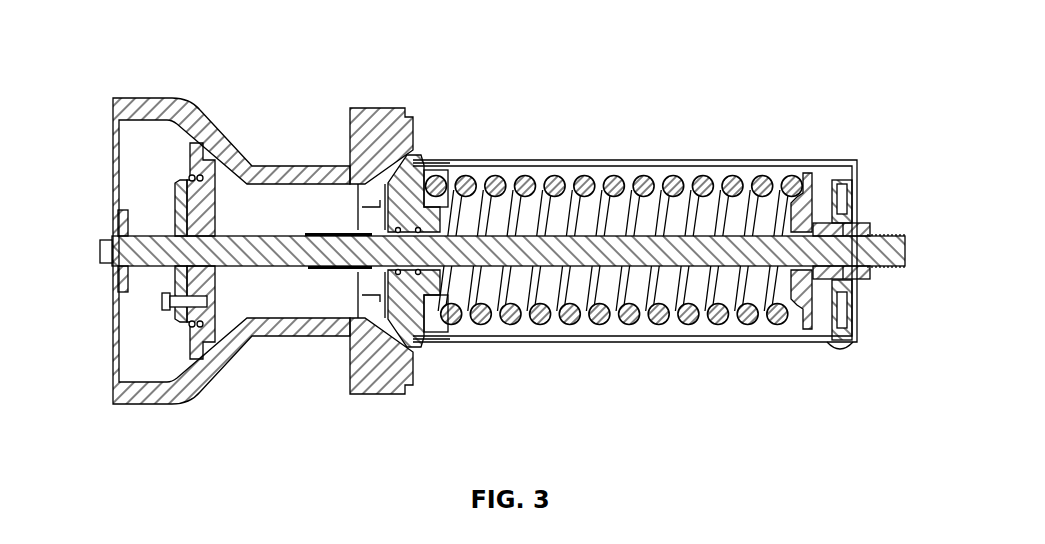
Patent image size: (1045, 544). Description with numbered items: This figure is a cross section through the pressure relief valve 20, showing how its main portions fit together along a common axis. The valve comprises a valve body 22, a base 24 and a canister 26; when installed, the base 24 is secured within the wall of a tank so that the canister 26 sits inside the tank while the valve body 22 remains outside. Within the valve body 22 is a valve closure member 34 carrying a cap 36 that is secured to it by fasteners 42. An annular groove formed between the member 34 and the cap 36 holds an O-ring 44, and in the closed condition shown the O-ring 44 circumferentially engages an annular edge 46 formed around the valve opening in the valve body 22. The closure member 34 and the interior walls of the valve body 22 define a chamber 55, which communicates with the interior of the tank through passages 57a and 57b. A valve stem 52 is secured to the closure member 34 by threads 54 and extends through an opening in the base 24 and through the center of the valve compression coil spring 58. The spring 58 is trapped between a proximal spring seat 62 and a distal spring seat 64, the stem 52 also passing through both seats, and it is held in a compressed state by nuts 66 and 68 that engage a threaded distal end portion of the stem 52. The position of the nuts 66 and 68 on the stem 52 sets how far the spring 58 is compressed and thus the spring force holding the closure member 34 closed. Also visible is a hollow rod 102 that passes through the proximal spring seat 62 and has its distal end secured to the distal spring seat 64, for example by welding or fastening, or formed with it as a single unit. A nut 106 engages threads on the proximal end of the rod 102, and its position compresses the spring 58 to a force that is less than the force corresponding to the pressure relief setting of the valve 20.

The pressure relief valve 20 is at (192, 50).
The valve body 22 is at (183, 395).
The base 24 is at (380, 388).
The canister 26 is at (655, 160).
The valve closure member 34 is at (210, 208).
The cap 36 is at (176, 203).
The fasteners 42 is at (163, 302).
The O-ring 44 is at (189, 176).
The annular edge 46 is at (213, 323).
The valve stem 52 is at (303, 268).
The threads 54 is at (213, 272).
The chamber 55 is at (260, 224).
The passage 57a is at (392, 160).
The passage 57b is at (412, 345).
The valve compression coil spring 58 is at (660, 318).
The proximal spring seat 62 is at (420, 338).
The distal spring seat 64 is at (808, 328).
The nut 66 is at (820, 230).
The nut 68 is at (862, 280).
The hollow rod 102 is at (606, 318).
The nut 106 is at (356, 216).